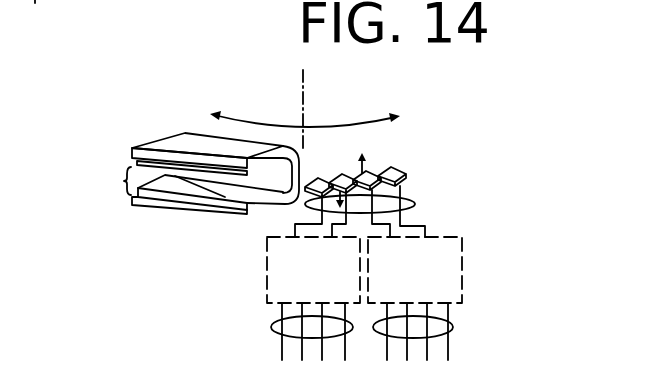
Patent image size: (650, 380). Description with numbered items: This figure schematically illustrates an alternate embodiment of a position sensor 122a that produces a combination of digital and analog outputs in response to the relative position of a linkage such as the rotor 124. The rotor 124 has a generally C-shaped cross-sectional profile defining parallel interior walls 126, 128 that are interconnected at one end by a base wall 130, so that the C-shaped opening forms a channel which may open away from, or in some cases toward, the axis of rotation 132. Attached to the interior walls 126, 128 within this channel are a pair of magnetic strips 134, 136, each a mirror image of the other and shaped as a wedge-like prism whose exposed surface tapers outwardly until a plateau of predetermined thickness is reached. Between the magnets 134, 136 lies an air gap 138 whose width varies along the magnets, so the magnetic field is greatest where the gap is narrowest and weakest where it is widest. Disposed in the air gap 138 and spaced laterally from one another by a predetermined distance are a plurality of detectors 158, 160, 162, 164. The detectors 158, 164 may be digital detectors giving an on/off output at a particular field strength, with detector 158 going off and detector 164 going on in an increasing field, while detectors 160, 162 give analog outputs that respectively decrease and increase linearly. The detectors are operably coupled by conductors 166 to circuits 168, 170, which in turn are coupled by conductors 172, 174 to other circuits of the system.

The position sensor 122a is at (120, 117).
The rotor 124 is at (153, 133).
The interior wall 126 is at (160, 162).
The interior wall 128 is at (194, 197).
The base wall 130 is at (273, 175).
The axis of rotation 132 is at (303, 89).
The magnetic strip 134 is at (137, 162).
The magnetic strip 136 is at (157, 201).
The air gap 138 is at (124, 177).
The detector 158 is at (321, 177).
The detector 160 is at (343, 174).
The detector 162 is at (378, 170).
The detector 164 is at (408, 168).
The conductors 166 is at (414, 200).
The circuit 168 is at (330, 285).
The circuit 170 is at (437, 285).
The conductors 172 is at (271, 327).
The conductors 174 is at (455, 327).